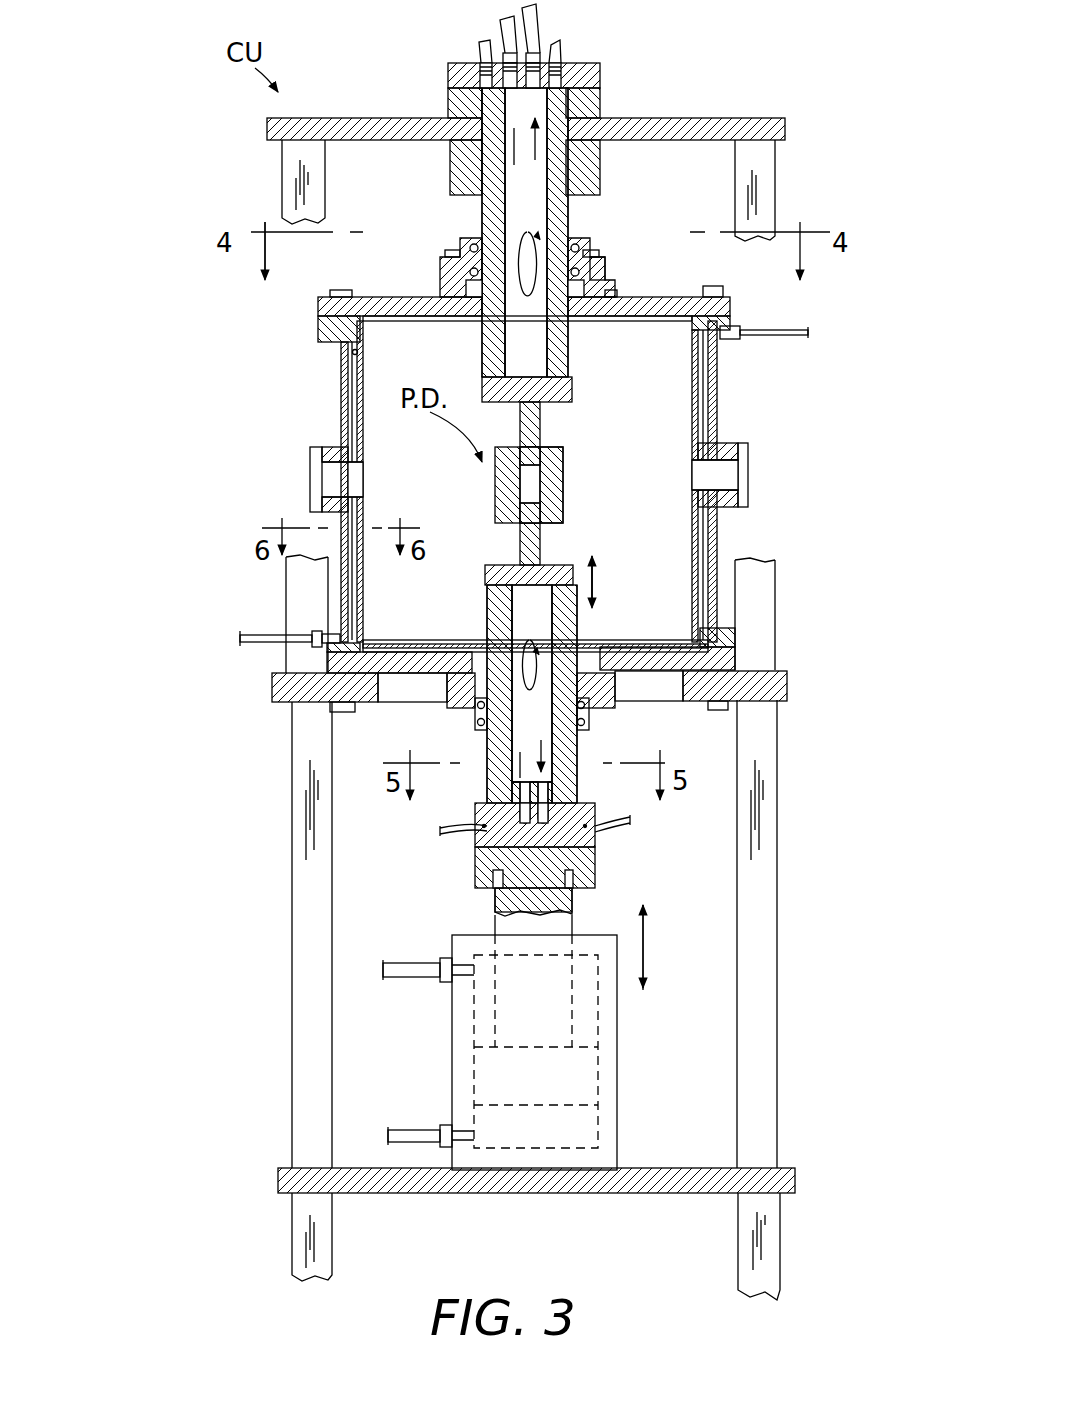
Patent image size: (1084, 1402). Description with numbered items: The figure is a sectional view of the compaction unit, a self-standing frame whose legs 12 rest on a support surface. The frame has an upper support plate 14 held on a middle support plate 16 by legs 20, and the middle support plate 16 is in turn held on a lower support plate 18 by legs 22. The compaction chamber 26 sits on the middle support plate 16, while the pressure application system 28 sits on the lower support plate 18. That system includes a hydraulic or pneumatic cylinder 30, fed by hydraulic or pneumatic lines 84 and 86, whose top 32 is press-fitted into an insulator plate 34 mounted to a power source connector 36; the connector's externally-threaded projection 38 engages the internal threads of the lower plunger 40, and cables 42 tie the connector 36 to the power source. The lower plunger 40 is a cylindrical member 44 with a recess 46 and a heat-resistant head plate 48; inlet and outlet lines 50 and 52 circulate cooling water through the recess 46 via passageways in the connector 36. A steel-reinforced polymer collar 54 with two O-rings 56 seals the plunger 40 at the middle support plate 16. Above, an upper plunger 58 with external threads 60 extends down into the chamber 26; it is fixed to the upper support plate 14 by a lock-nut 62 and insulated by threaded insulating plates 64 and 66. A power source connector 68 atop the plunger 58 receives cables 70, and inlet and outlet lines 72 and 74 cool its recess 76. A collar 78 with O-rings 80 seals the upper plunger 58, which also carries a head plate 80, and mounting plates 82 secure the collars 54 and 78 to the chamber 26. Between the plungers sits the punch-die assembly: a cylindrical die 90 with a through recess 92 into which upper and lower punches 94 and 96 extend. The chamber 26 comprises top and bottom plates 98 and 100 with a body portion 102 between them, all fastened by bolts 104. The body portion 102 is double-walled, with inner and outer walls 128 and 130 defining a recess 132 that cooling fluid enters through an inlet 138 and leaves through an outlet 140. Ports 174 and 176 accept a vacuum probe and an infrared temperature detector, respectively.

The legs 12 is at (332, 1248).
The upper support plate 14 is at (785, 128).
The middle support plate 16 is at (787, 688).
The lower support plate 18 is at (795, 1180).
The legs 20 is at (282, 180).
The legs 22 is at (777, 925).
The compaction chamber 26 is at (338, 388).
The pressure application system 28 is at (365, 915).
The hydraulic or pneumatic cylinder 30 is at (617, 1063).
The top 32 is at (493, 880).
The insulator plate 34 is at (595, 870).
The power source connector 36 is at (595, 845).
The externally-threaded projection 38 is at (533, 790).
The lower plunger 40 is at (578, 610).
The cables 42 is at (452, 830).
The cylindrical member 44 is at (485, 572).
The recess 46 is at (512, 615).
The head plate 48 is at (500, 562).
The inlet line 50 is at (512, 795).
The outlet line 52 is at (548, 800).
The collar 54 is at (615, 705).
The O-rings 56 is at (462, 708).
The upper plunger 58 is at (568, 215).
The external threads 60 is at (575, 165).
The lock-nut 62 is at (600, 180).
The insulating plate 64 is at (450, 150).
The insulating plate 66 is at (450, 100).
The power source connector 68 is at (600, 75).
The cables 70 is at (480, 52).
The inlet line 72 is at (500, 38).
The outlet line 74 is at (532, 35).
The recess 76 is at (482, 225).
The collar 78 is at (605, 272).
The O-rings / head plate 80 is at (588, 250).
The mounting plates 82 is at (615, 295).
The hydraulic or pneumatic line 84 is at (400, 1128).
The hydraulic or pneumatic line 86 is at (400, 980).
The die 90 is at (563, 492).
The recess 92 is at (532, 480).
The upper punch 94 is at (540, 430).
The lower punch 96 is at (540, 540).
The top plate 98 is at (318, 306).
The bottom plate 100 is at (735, 650).
The body portion 102 is at (717, 408).
The bolts 104 is at (725, 290).
The inner wall 128 is at (363, 448).
The outer wall 130 is at (343, 420).
The recess 132 is at (357, 356).
The inlet 138 is at (258, 633).
The outlet 140 is at (790, 335).
The port 174 is at (310, 490).
The port 176 is at (748, 480).